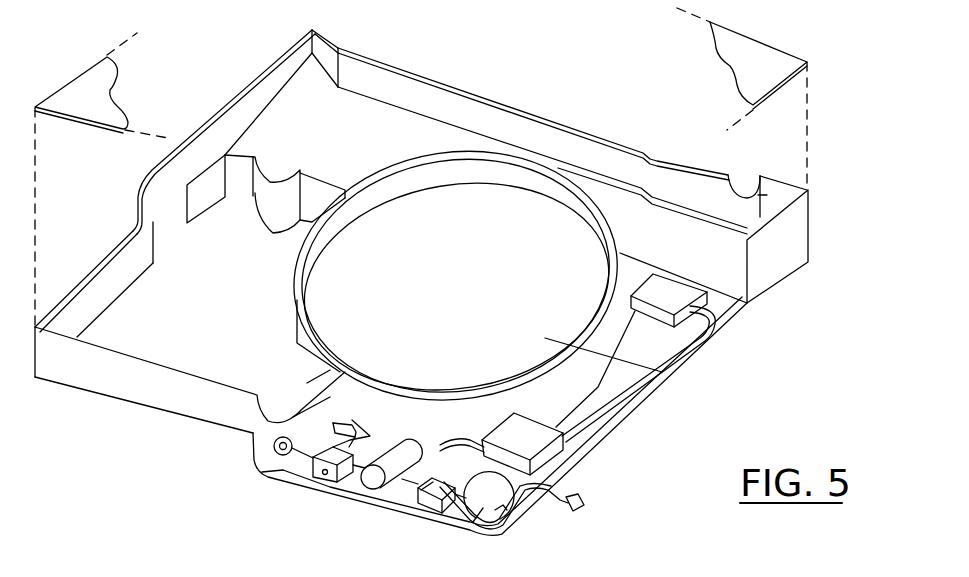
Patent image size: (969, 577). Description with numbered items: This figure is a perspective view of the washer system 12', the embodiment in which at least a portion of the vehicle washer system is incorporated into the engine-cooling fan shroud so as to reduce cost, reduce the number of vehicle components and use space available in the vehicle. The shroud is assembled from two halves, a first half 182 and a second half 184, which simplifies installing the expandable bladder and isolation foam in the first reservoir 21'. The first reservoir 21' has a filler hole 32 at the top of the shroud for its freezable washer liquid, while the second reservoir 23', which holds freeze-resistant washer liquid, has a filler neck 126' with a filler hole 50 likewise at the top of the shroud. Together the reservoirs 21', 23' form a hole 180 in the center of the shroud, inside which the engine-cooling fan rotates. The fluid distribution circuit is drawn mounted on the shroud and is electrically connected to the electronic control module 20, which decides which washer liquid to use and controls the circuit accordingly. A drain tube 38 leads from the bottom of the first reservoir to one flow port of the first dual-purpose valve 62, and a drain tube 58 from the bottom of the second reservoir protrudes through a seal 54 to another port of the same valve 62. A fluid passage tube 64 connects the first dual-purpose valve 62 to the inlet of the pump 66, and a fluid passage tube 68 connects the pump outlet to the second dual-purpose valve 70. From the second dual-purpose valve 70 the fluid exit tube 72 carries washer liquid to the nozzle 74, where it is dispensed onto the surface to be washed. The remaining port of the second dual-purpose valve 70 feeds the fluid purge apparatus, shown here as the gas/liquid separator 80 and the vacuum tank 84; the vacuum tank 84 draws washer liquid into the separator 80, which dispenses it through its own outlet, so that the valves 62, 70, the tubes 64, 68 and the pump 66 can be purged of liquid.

The filler hole 50 is at (326, 43).
The second half 184 is at (108, 82).
The washer system 12' is at (751, 99).
The filler neck 126' is at (235, 146).
The second reservoir 23' is at (94, 267).
The first half 182 is at (140, 395).
The first reservoir 21' is at (573, 175).
The filler hole 32 is at (729, 185).
The vacuum tank 84 is at (677, 283).
The hole 180 is at (665, 372).
The electronic control module 20 is at (520, 423).
The drain tube 38 is at (355, 425).
The seal 54 is at (274, 445).
The drain tube 58 is at (283, 477).
The first dual-purpose valve 62 is at (312, 480).
The fluid passage tube 64 is at (333, 477).
The pump 66 is at (378, 480).
The fluid passage tube 68 is at (402, 493).
The second dual-purpose valve 70 is at (433, 505).
The gas/liquid separator 80 is at (508, 525).
The fluid exit tube 72 is at (583, 472).
The nozzle 74 is at (580, 500).